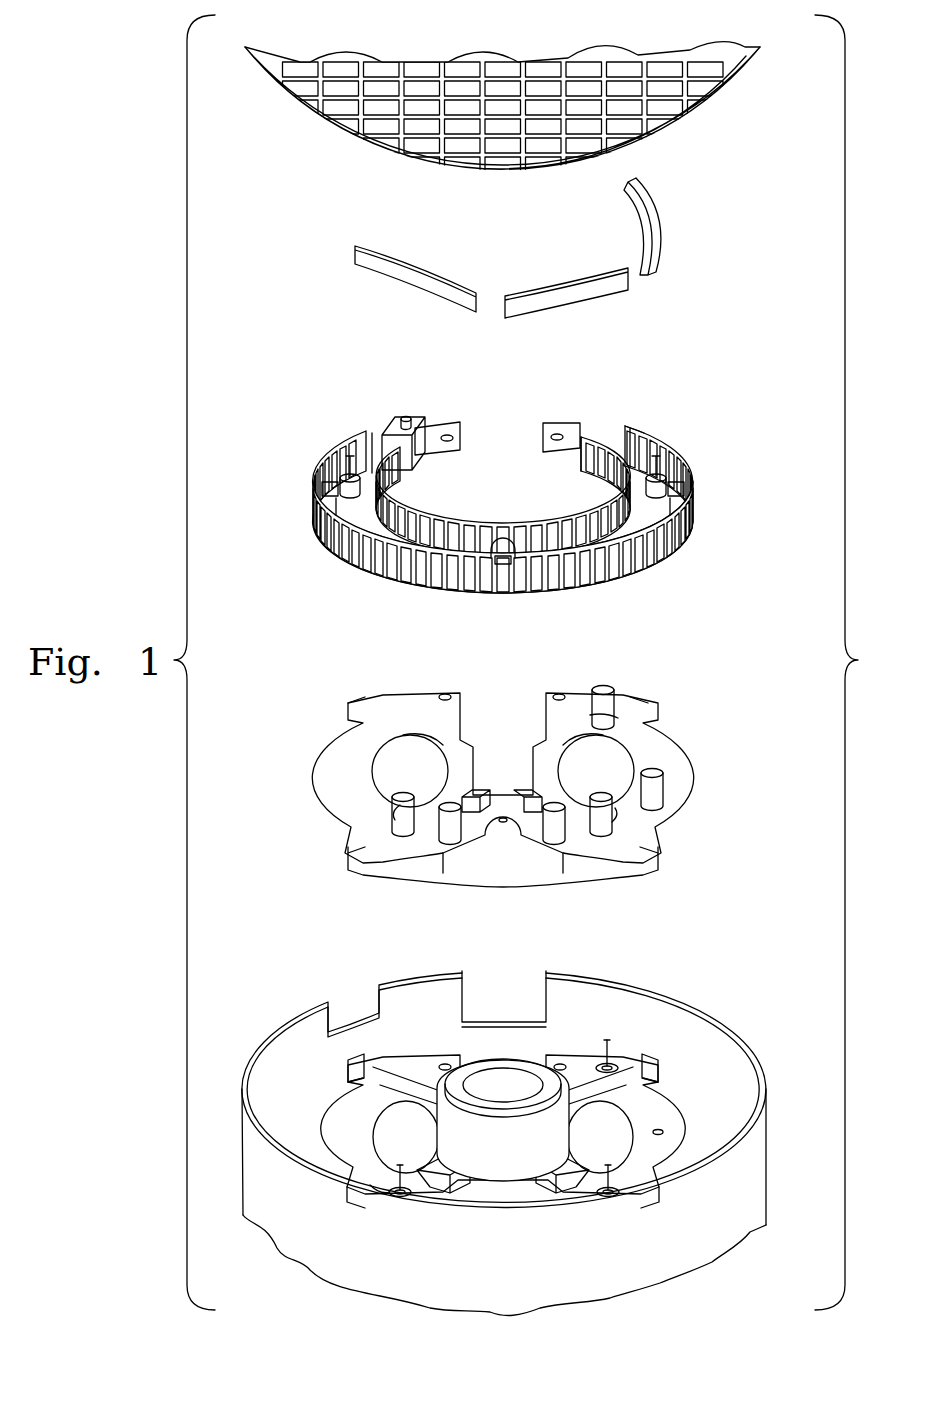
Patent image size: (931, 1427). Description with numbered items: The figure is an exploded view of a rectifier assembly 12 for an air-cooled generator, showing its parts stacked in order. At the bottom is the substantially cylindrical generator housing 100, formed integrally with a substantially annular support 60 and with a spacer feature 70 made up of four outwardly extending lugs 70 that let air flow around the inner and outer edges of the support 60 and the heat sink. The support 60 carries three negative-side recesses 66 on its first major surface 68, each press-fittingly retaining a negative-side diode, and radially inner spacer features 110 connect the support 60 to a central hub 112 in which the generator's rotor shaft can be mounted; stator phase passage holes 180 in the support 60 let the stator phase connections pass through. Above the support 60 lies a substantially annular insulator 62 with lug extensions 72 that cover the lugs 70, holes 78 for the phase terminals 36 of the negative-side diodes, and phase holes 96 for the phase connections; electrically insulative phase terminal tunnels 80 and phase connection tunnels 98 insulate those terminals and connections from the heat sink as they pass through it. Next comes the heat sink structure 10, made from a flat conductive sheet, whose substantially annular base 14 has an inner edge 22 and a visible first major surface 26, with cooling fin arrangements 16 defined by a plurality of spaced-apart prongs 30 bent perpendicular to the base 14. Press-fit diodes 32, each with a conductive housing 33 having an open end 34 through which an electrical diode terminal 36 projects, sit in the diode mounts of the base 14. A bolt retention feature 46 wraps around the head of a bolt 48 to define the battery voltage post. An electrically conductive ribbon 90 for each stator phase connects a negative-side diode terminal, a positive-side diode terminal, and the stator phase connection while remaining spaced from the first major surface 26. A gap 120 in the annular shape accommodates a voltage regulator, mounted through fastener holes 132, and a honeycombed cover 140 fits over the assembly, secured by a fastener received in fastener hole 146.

In FIG. 1, the heat sink structure 10 is at (503, 509).
In FIG. 1, the rectifier assembly 12 is at (851, 662).
In FIG. 1, the substantially annular base 14 is at (575, 440).
In FIG. 1, the cooling fin arrangement 16 is at (488, 529).
In FIG. 1, the inner edge 22 is at (600, 466).
In FIG. 1, the first major surface 26 is at (672, 430).
In FIG. 1, the prong 30 is at (400, 566).
In FIG. 1, the diode 32 is at (325, 494).
The conductive housing 33 is at (340, 520).
In FIG. 1, the open end 34 is at (338, 482).
The electrical diode terminal 36 is at (340, 466).
In FIG. 1, the bolt retention feature 46 is at (395, 440).
In FIG. 1, the bolt 48 is at (406, 416).
The substantially annular support 60 is at (515, 1102).
The substantially annular insulator 62 is at (537, 781).
The negative-side recess 66 is at (612, 1068).
The first major surface 68 is at (375, 1195).
The spacer feature 70 is at (355, 1062).
The lug extension 72 is at (372, 695).
The hole 78 is at (603, 688).
The phase terminal tunnel 80 is at (612, 718).
In FIG. 1, the electrically conductive ribbon 90 is at (415, 268).
The phase hole 96 is at (456, 810).
The phase connection tunnel 98 is at (448, 838).
The generator housing 100 is at (768, 1138).
The radially inner spacer feature 110 is at (410, 1080).
The hub 112 is at (490, 1076).
In FIG. 1, the gap 120 is at (512, 424).
In FIG. 1, the fastener hole 132 is at (449, 436).
In FIG. 1, the honeycombed cover 140 is at (700, 128).
The fastener hole 146 is at (503, 824).
The stator phase passage hole 180 is at (660, 1136).